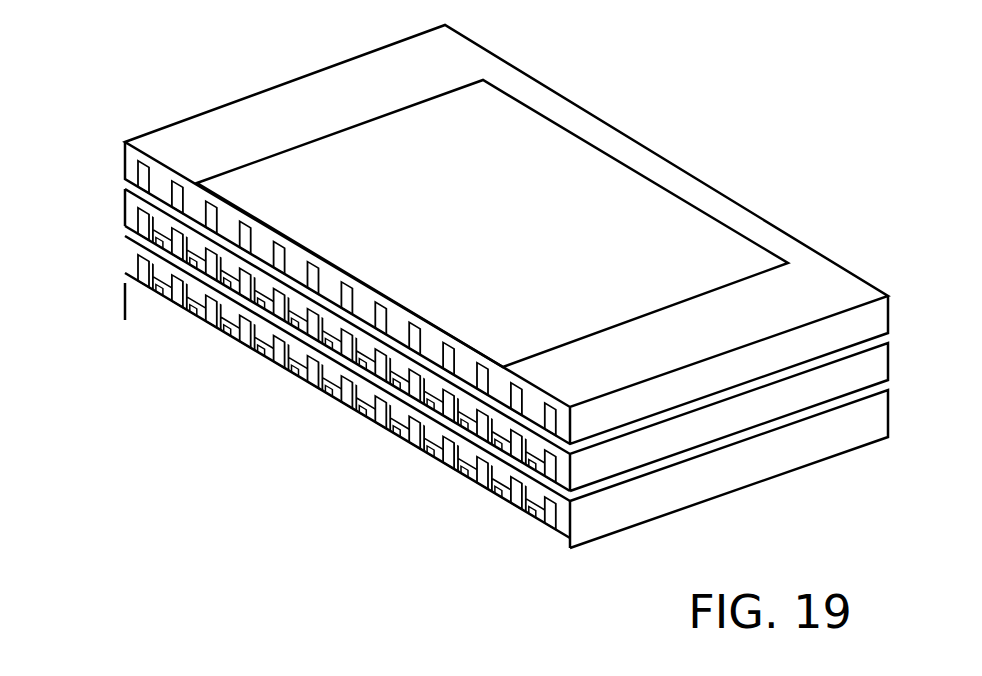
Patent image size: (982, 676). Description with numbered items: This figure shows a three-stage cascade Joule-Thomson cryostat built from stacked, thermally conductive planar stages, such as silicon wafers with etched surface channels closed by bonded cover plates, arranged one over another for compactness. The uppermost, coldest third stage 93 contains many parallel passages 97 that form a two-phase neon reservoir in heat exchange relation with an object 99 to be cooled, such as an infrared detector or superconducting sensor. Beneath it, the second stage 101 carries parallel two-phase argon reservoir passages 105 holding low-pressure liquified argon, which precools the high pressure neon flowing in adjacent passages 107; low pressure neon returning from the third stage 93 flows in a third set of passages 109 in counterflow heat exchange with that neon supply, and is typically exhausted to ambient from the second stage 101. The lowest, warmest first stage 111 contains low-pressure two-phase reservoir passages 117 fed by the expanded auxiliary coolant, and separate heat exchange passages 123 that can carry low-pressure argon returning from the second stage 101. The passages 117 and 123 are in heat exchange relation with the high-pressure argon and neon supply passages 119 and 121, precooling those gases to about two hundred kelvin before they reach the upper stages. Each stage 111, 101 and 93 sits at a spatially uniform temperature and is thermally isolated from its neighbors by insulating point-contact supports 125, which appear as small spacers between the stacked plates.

The third stage 93 is at (233, 101).
The object to be cooled 99 is at (413, 158).
The second stage 101 is at (123, 212).
The first stage 111 is at (130, 272).
The two-phase argon reservoir passages 105 is at (142, 181).
The parallel passages 97 is at (305, 258).
The high pressure neon supply passages 107 is at (148, 246).
The two-phase reservoir passages 117 is at (163, 300).
The high-pressure argon supply passage 119 is at (298, 373).
The high-pressure neon supply passage 121 is at (405, 425).
The third set of passages 109 is at (390, 380).
The insulating point-contact supports 125 is at (460, 390).
The separate heat exchange passages 123 is at (147, 285).